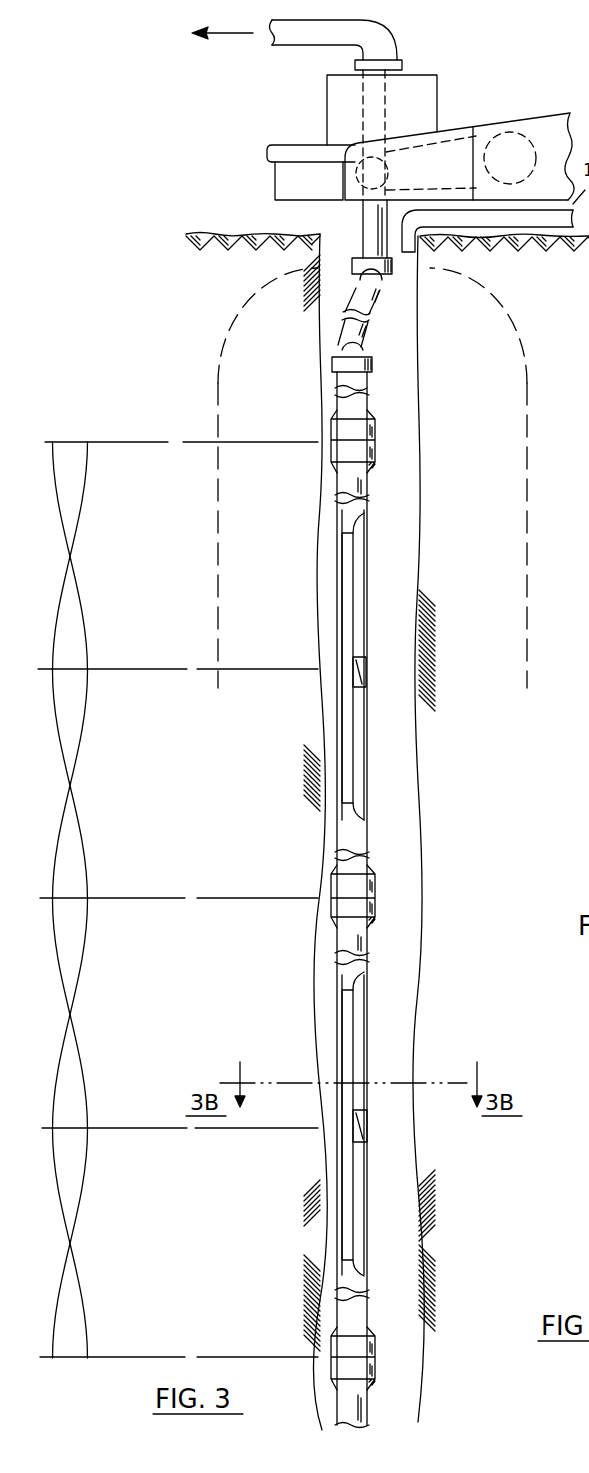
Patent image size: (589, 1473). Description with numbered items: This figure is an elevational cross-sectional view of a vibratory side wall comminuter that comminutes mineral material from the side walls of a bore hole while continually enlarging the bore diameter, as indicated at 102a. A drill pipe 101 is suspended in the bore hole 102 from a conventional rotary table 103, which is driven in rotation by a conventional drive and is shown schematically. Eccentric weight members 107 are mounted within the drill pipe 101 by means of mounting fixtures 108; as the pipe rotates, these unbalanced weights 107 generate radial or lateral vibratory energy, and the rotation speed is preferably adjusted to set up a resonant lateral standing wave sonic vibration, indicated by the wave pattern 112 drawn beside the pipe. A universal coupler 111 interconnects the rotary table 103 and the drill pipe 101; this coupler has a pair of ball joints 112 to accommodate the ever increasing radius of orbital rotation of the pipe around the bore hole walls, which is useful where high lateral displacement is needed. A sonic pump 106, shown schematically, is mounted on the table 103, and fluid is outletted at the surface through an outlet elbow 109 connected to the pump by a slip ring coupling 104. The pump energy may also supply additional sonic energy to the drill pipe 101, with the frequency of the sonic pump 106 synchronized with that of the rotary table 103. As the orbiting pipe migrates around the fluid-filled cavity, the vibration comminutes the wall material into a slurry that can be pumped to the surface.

The drill pipe 101 is at (362, 213).
The bore hole 102 is at (416, 385).
The enlarged bore diameter 102a is at (231, 338).
The rotary table 103 is at (290, 147).
The slip ring coupling 104 is at (355, 65).
The sonic pump 106 is at (415, 100).
The eccentric weight members 107 is at (345, 548).
The mounting fixtures 108 is at (365, 655).
The outlet elbow 109 is at (365, 38).
The universal coupler 111 is at (386, 298).
The ball joints / wave pattern 112 is at (83, 480).